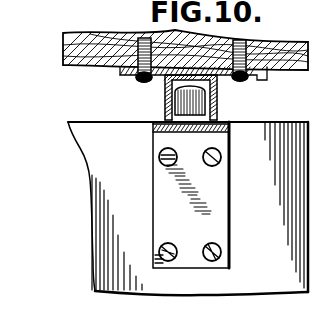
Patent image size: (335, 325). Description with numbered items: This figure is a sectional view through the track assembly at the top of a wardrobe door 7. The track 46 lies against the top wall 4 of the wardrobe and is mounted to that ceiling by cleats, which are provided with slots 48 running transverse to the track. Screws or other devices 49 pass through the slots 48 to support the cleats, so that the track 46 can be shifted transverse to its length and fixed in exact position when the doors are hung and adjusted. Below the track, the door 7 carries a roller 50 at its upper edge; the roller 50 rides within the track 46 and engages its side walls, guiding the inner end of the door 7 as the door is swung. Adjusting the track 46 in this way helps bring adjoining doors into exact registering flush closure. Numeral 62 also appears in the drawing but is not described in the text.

The top wall 4 is at (82, 48).
The door 7 is at (88, 142).
The track 46 is at (168, 86).
The slot 48 is at (244, 44).
The screw 49 is at (138, 82).
The roller 50 is at (220, 100).
The hook 62 is at (91, 6).